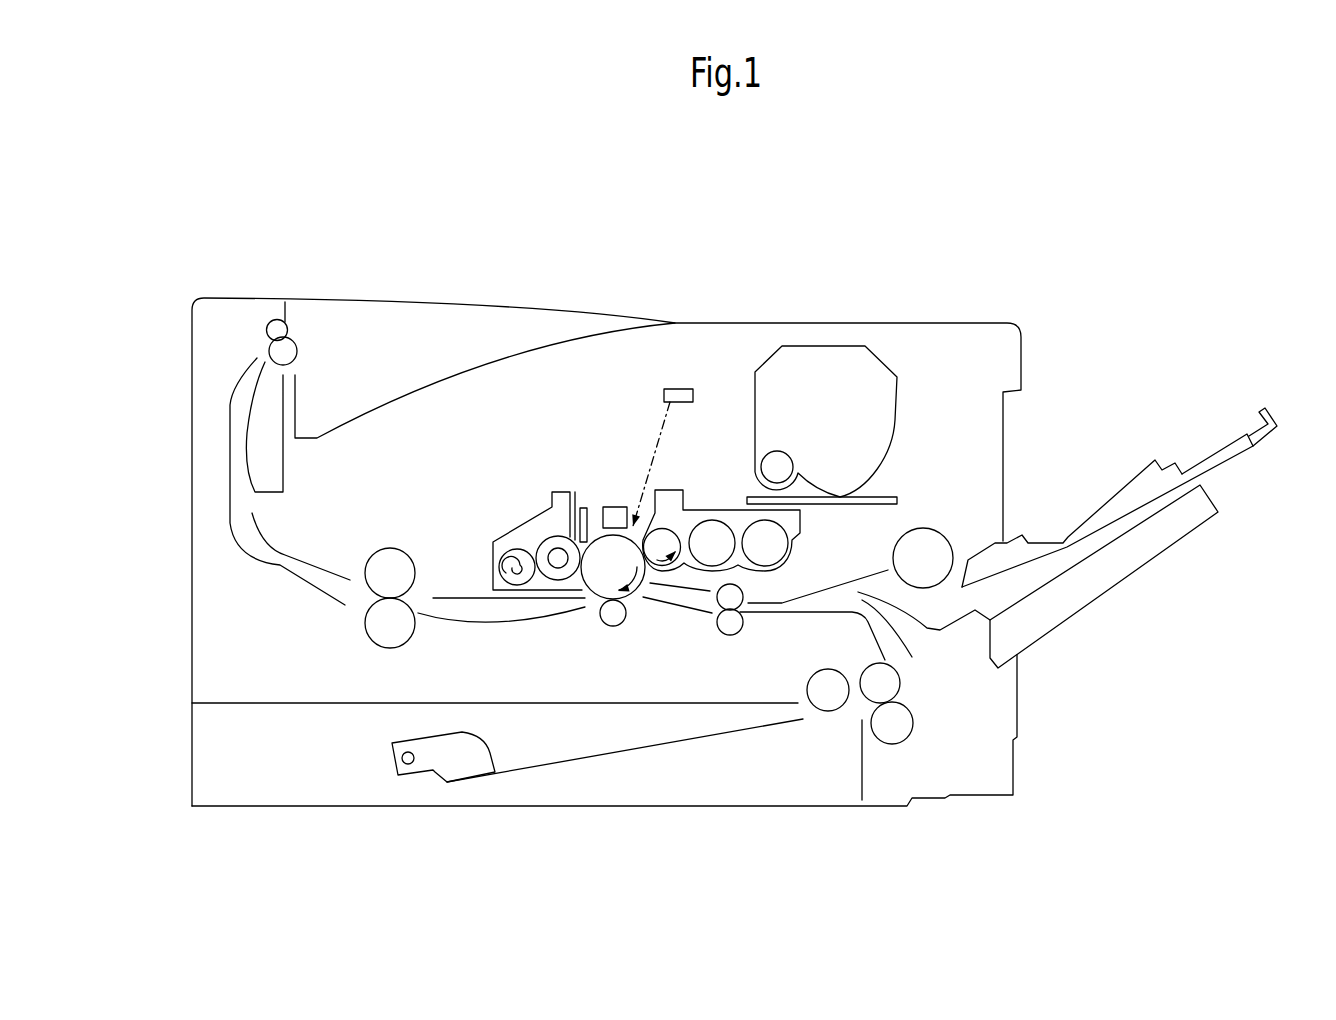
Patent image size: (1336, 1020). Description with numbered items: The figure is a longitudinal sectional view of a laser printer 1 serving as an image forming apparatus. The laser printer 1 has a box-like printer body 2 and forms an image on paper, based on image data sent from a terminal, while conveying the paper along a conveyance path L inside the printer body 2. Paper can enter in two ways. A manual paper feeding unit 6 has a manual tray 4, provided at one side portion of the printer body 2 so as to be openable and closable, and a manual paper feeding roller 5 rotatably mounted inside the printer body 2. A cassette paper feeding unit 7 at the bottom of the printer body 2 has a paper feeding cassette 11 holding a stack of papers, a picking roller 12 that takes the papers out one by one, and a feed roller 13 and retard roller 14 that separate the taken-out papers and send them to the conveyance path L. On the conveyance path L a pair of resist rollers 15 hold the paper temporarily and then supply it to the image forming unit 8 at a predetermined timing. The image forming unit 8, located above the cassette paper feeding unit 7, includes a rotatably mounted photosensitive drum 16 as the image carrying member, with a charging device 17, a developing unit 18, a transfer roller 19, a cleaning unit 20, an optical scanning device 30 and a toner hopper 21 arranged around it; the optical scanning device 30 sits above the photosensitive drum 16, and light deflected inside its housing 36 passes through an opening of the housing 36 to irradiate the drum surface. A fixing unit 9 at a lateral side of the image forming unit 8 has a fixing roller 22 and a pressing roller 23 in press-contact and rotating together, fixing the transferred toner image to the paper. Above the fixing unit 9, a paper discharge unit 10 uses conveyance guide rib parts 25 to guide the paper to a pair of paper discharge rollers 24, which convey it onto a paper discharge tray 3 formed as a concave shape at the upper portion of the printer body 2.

The laser printer 1 is at (655, 135).
The printer body 2 is at (190, 566).
The paper discharge tray 3 is at (390, 402).
The manual tray 4 is at (1208, 465).
The manual paper feeding roller 5 is at (932, 530).
The manual paper feeding unit 6 is at (1119, 487).
The cassette paper feeding unit 7 is at (968, 689).
The image forming unit 8 is at (693, 448).
The fixing unit 9 is at (330, 592).
The paper discharge unit 10 is at (425, 415).
The paper feeding cassette 11 is at (627, 763).
The picking roller 12 is at (832, 703).
The feed roller 13 is at (893, 682).
The retard roller 14 is at (902, 730).
The pair of resist rollers 15 is at (743, 627).
The photosensitive drum 16 is at (637, 595).
The charging device 17 is at (613, 506).
The developing unit 18 is at (797, 545).
The transfer roller 19 is at (622, 622).
The cleaning unit 20 is at (507, 534).
The toner hopper 21 is at (828, 365).
The fixing roller 22 is at (392, 552).
The pressing roller 23 is at (372, 642).
The pair of paper discharge rollers 24 is at (291, 343).
The conveyance guide rib parts 25 is at (281, 477).
The optical scanning device 30 is at (679, 373).
The housing 36 is at (685, 387).
The conveyance path L is at (488, 620).